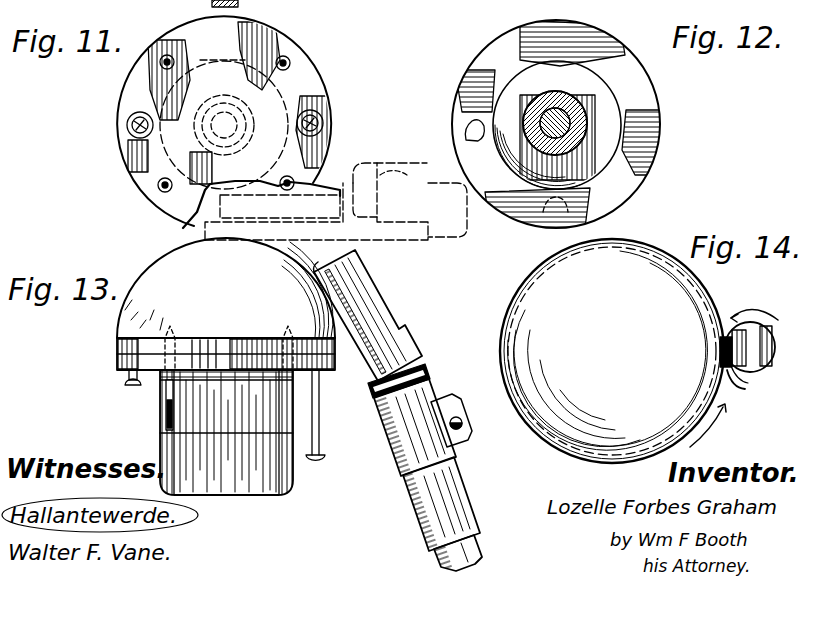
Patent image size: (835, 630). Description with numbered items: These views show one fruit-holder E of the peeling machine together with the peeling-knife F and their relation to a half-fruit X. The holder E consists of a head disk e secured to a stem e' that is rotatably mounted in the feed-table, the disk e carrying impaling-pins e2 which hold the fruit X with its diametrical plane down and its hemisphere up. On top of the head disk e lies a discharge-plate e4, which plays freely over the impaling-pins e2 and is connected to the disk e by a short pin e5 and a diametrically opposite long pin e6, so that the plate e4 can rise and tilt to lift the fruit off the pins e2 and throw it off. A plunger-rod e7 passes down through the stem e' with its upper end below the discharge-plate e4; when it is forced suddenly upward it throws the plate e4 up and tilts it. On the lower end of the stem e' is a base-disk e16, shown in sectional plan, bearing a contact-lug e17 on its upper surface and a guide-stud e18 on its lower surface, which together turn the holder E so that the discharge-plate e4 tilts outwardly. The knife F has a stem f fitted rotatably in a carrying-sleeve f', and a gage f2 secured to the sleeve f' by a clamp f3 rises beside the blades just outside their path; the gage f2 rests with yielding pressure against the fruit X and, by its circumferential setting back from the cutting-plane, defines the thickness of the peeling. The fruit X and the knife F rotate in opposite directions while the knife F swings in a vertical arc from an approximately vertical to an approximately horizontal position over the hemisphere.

In FIG. 11, the discharge-plate e4 is at (307, 82).
In FIG. 11, the fruit-holder E is at (257, 124).
In FIG. 13, the fruit-holder E is at (204, 432).
In FIG. 11, the impaling-pins e2 is at (333, 184).
In FIG. 13, the impaling-pins e2 is at (170, 412).
In FIG. 11, the short pin e5 is at (134, 132).
In FIG. 13, the short pin e5 is at (126, 384).
In FIG. 11, the long pin e6 is at (324, 124).
In FIG. 13, the long pin e6 is at (320, 425).
In FIG. 11, the peeling-knife F is at (305, 201).
In FIG. 13, the peeling-knife F is at (387, 337).
In FIG. 14, the peeling-knife F is at (757, 366).
In FIG. 11, the clamp f3 is at (385, 164).
In FIG. 13, the clamp f3 is at (454, 401).
In FIG. 11, the carrying-sleeve f' is at (447, 221).
In FIG. 13, the carrying-sleeve f' is at (431, 465).
In FIG. 12, the base-disk e16 is at (480, 62).
In FIG. 12, the stem e' is at (611, 134).
In FIG. 12, the plunger-rod e7 is at (586, 132).
In FIG. 12, the contact-lug e17 is at (467, 130).
In FIG. 12, the guide-stud e18 is at (555, 215).
In FIG. 13, the half-fruit X is at (226, 288).
In FIG. 14, the half-fruit X is at (613, 351).
In FIG. 13, the head disk e is at (197, 350).
In FIG. 13, the gage f2 is at (322, 245).
In FIG. 14, the gage f2 is at (747, 387).
In FIG. 13, the stem f is at (440, 467).